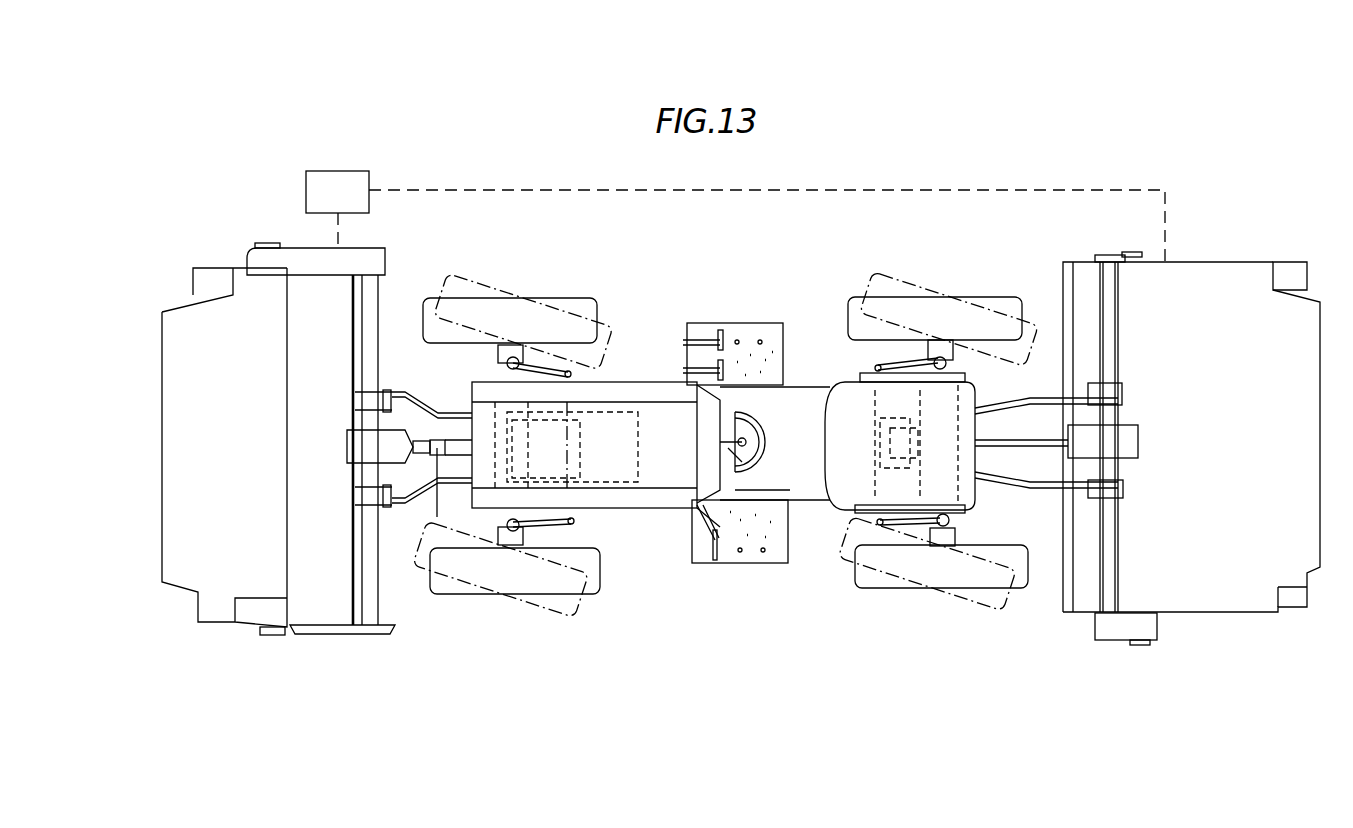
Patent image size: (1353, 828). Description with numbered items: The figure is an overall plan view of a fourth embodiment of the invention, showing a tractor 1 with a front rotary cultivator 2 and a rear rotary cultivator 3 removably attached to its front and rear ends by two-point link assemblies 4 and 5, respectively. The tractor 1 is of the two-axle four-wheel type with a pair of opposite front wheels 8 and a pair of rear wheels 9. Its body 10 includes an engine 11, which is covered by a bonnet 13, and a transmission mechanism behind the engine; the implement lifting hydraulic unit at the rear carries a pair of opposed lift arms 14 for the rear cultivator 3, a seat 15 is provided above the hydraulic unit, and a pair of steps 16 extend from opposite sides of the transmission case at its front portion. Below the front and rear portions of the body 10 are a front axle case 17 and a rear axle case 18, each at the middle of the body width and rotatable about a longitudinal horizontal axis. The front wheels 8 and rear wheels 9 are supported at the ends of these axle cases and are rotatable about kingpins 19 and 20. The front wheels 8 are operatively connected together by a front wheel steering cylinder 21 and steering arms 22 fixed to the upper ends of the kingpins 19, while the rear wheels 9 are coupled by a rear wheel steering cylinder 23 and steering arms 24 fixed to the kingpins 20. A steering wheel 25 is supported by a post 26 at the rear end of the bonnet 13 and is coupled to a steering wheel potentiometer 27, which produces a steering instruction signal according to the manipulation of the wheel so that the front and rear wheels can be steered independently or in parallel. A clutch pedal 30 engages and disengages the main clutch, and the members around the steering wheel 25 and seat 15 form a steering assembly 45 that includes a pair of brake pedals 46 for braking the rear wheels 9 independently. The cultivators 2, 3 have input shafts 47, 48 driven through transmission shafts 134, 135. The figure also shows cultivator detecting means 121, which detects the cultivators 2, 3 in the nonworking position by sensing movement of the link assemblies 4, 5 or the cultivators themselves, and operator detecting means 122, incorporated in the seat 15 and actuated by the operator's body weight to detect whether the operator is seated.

The tractor 1 is at (695, 570).
The front rotary cultivator 2 is at (242, 632).
The rear rotary cultivator 3 is at (1225, 612).
The two-point link assembly 4 is at (417, 393).
The two-point link assembly 5 is at (1043, 497).
The front wheels 8 is at (445, 312).
The rear wheels 9 is at (880, 290).
The tractor body 10 is at (803, 380).
The engine 11 is at (620, 410).
The bonnet 13 is at (645, 508).
The lift arms 14 is at (1003, 410).
The seat 15 is at (843, 483).
The steps 16 is at (757, 325).
The front axle case 17 is at (530, 457).
The rear axle case 18 is at (900, 450).
The kingpin 19 is at (515, 362).
The kingpin 20 is at (945, 362).
The front wheel steering cylinder 21 is at (617, 428).
The steering arms 22 is at (560, 372).
The rear wheel steering cylinder 23 is at (870, 410).
The steering arms 24 is at (897, 365).
The steering wheel 25 is at (765, 438).
The post 26 is at (745, 470).
The steering wheel potentiometer 27 is at (735, 424).
The clutch pedal 30 is at (720, 560).
The steering assembly 45 is at (778, 508).
The brake pedals 46 is at (706, 370).
The input shaft 47 is at (432, 442).
The input shaft 48 is at (1075, 440).
The cultivator detecting means 121 is at (323, 205).
The operator detecting means 122 is at (905, 468).
The transmission shaft 134 is at (408, 540).
The transmission shaft 135 is at (1000, 412).